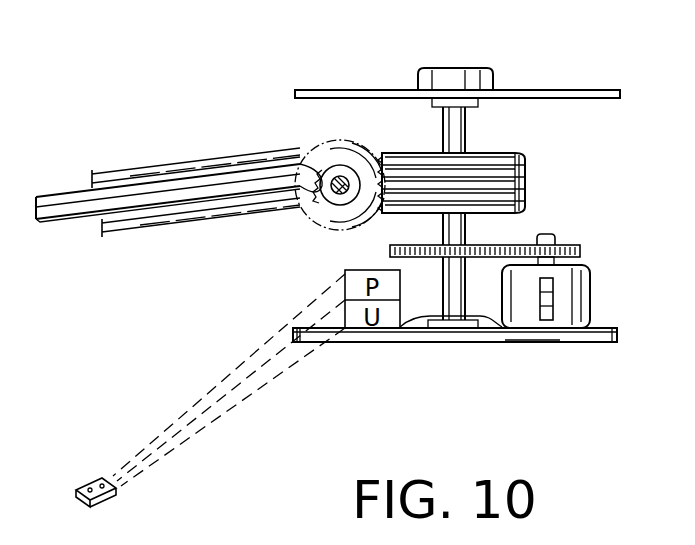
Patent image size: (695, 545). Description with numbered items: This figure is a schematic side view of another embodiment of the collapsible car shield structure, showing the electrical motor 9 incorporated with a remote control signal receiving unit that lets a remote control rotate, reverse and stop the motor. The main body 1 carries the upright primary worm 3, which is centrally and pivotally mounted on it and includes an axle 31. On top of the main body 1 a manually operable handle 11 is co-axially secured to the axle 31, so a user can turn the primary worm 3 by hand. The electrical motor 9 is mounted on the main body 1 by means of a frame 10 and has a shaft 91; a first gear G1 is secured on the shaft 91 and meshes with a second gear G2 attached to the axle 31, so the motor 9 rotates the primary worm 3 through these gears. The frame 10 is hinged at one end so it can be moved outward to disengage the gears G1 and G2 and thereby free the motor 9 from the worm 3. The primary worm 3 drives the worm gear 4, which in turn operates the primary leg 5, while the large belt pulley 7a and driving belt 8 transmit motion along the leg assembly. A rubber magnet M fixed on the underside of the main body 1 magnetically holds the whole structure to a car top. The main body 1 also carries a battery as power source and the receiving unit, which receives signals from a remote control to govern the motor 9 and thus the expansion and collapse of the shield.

The main body 1 is at (578, 90).
The manually operable handle 11 is at (460, 78).
The axle 31 is at (447, 128).
The primary worm 3 is at (528, 168).
The large belt pulley 7a is at (322, 170).
The worm gear 4 is at (320, 226).
The primary leg 5 is at (78, 218).
The driving belt 8 is at (208, 222).
The second gear G2 is at (392, 248).
The shaft 91 is at (548, 234).
The first gear G1 is at (576, 248).
The electrical motor 9 is at (592, 283).
The frame 10 is at (556, 300).
The rubber magnet M is at (526, 341).